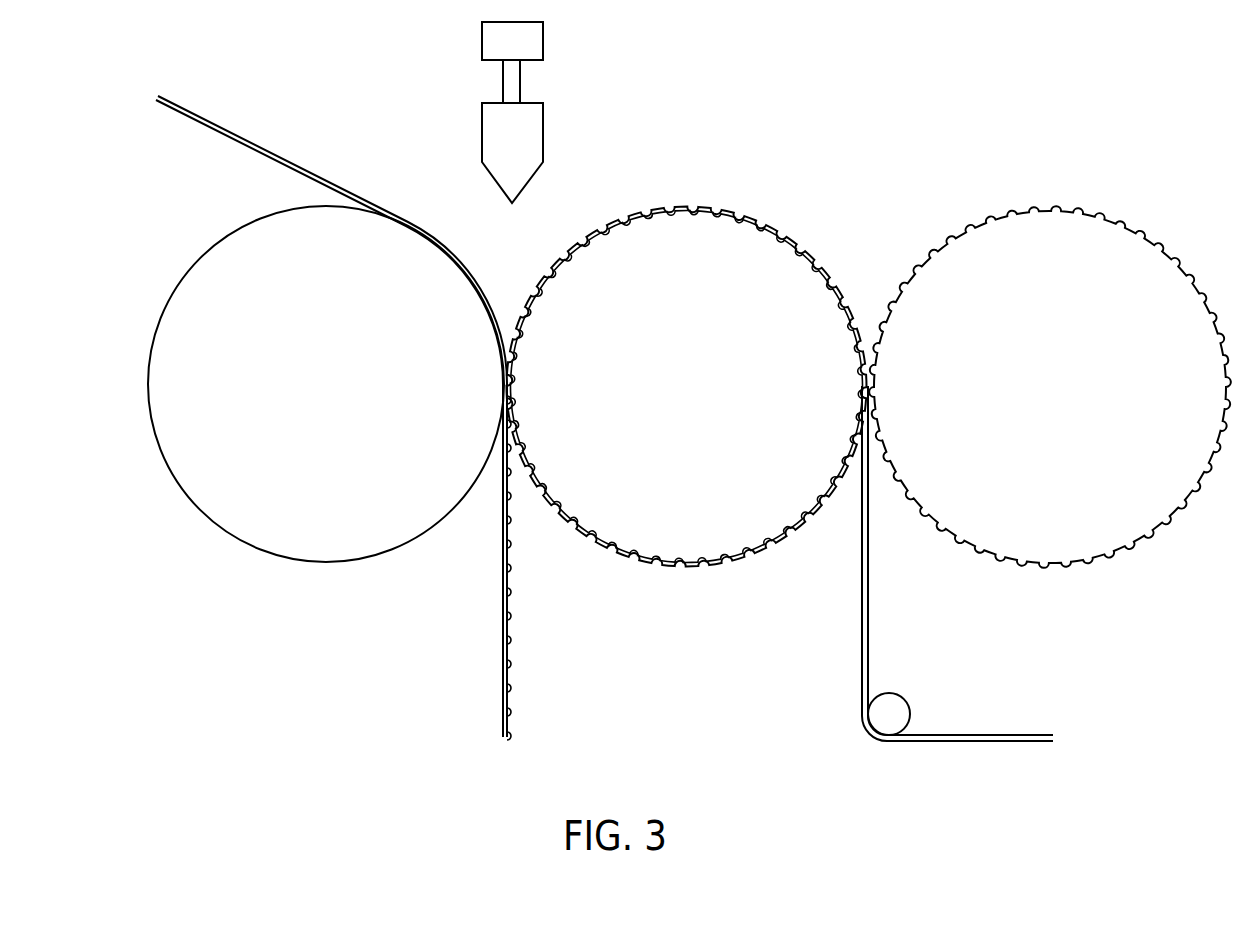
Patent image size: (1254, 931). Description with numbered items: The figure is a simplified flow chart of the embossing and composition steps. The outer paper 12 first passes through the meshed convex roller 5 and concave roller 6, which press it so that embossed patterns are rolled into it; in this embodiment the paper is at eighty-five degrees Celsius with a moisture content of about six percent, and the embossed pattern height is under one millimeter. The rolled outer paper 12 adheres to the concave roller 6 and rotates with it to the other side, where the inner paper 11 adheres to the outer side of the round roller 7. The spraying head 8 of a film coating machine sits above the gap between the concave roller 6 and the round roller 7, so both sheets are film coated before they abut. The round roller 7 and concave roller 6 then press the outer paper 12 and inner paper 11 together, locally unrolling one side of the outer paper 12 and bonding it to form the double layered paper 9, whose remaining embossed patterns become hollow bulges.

The convex roller 5 is at (1022, 327).
The concave roller 6 is at (732, 320).
The round roller 7 is at (332, 403).
The spraying head 8 is at (518, 133).
The double layered paper 9 is at (528, 608).
The inner paper 11 is at (250, 143).
The outer paper 12 is at (862, 538).